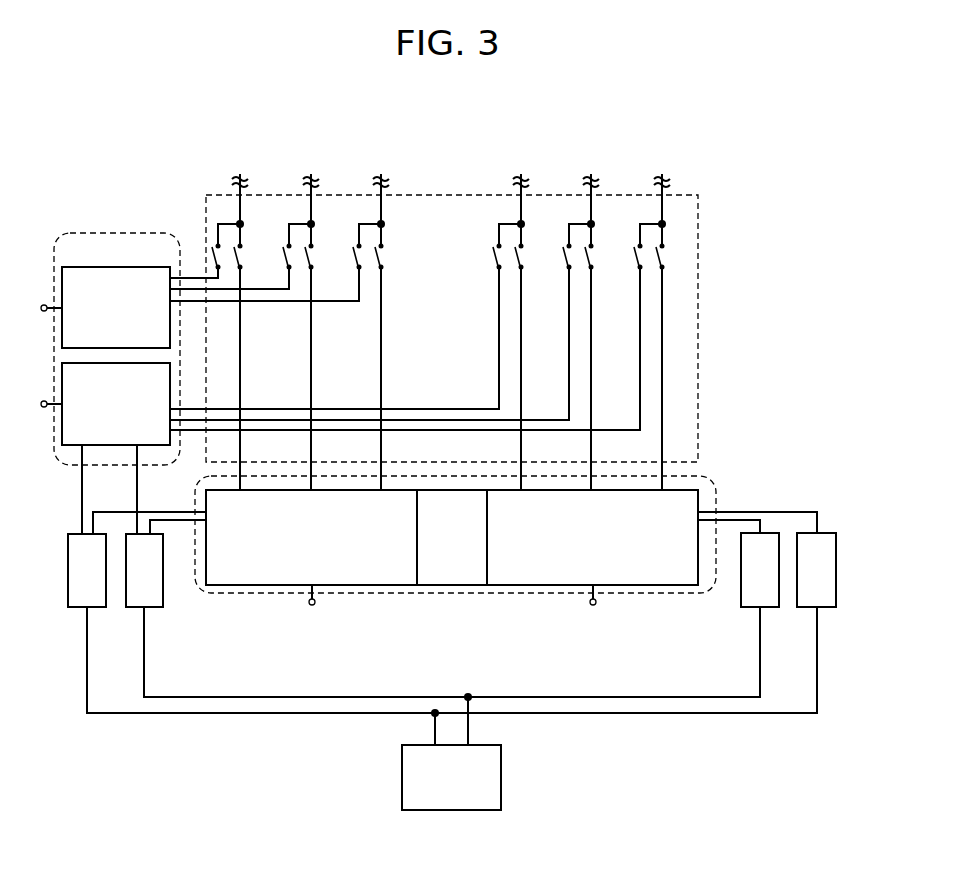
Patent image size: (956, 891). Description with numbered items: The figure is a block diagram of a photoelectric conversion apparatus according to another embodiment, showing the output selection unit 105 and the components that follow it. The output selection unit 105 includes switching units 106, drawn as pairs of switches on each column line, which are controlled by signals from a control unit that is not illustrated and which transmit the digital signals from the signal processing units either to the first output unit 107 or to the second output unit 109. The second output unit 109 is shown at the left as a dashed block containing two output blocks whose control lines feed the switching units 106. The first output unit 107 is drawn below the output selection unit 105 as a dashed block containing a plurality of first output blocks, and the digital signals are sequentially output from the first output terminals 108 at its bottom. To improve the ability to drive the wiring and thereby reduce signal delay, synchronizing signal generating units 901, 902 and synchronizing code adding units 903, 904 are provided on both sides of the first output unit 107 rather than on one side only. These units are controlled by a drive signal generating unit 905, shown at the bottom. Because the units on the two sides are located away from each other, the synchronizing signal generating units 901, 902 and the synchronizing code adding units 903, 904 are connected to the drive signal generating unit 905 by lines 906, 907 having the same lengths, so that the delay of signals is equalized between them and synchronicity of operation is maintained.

The output selection unit 105 is at (206, 195).
The switching unit 106 is at (212, 242).
The first output unit 107 is at (206, 503).
The first output terminal 108 is at (316, 605).
The second output unit 109 is at (90, 233).
The synchronizing signal generating unit 901 is at (68, 534).
The synchronizing signal generating unit 902 is at (825, 533).
The synchronizing code adding unit 903 is at (163, 596).
The synchronizing code adding unit 904 is at (741, 596).
The drive signal generating unit 905 is at (402, 775).
The wiring 906 is at (192, 714).
The wiring 907 is at (258, 697).